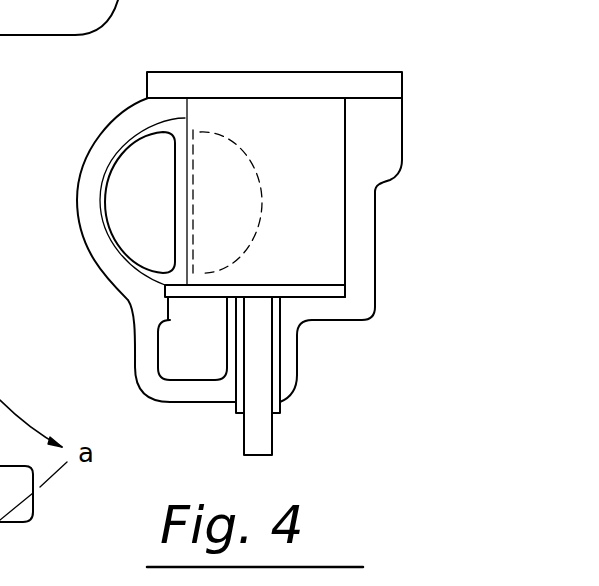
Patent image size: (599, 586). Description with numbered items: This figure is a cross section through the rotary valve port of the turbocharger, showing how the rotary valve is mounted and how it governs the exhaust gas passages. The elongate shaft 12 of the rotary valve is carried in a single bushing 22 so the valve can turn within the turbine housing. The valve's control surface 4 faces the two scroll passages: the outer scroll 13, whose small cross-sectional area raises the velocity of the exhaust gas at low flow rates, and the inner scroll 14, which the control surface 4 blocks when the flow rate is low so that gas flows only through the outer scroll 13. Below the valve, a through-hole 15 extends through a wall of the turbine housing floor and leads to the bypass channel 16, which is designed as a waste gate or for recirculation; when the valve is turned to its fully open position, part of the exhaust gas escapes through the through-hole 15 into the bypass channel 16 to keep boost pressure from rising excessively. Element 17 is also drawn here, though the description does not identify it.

The control surface 4 is at (298, 133).
The elongate shaft 12 is at (253, 430).
The outer scroll 13 is at (120, 198).
The inner scroll 14 is at (225, 160).
The through-hole 15 is at (182, 310).
The bypass channel 16 is at (195, 352).
The arm 17 is at (0, 70).
The bushing 22 is at (278, 367).